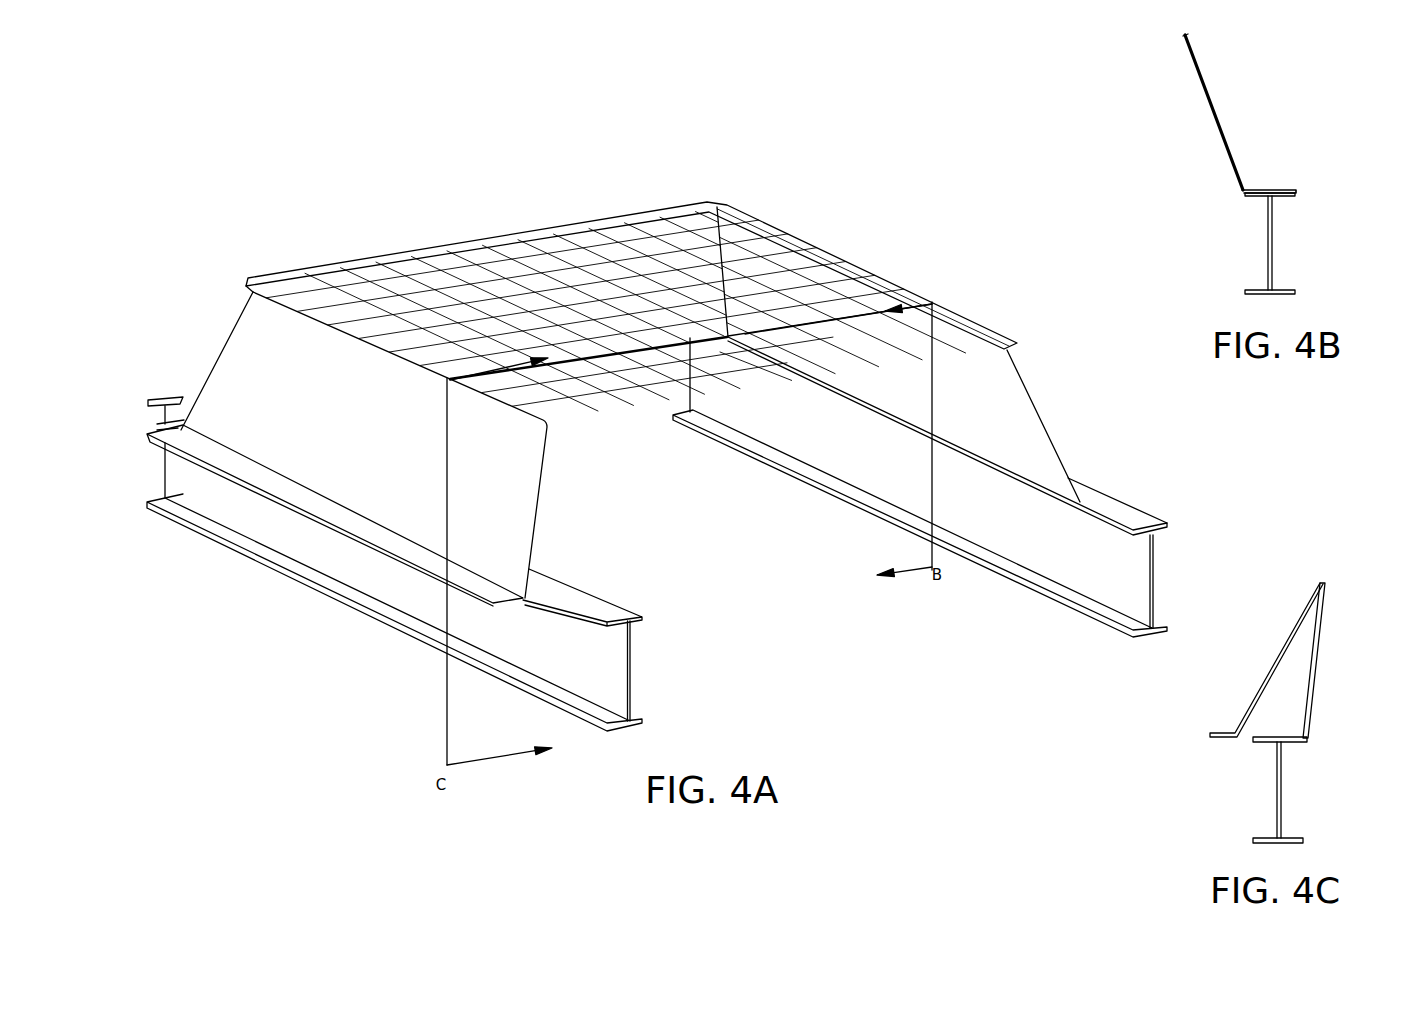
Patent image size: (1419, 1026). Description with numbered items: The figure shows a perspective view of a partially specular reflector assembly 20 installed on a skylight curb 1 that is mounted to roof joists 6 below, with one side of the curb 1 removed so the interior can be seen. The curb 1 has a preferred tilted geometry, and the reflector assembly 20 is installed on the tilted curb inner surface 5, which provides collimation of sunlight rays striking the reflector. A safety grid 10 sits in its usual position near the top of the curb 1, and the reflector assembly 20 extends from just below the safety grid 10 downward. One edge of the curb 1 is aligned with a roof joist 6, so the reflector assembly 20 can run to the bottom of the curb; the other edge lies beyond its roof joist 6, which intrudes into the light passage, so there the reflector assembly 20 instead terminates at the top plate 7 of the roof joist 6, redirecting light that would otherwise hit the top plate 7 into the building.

In FIG. 4A, the curb 1 is at (181, 364).
In FIG. 4A, the tilted curb inner surface 5 is at (896, 400).
In FIG. 4B, the tilted curb inner surface 5 is at (1245, 128).
In FIG. 4C, the tilted curb inner surface 5 is at (1295, 668).
In FIG. 4A, the roof joist 6 is at (1126, 470).
In FIG. 4B, the roof joist 6 is at (1267, 238).
In FIG. 4B, the top plate 7 is at (1278, 190).
In FIG. 4C, the top plate 7 is at (1286, 742).
In FIG. 4A, the safety grid 10 is at (557, 301).
In FIG. 4A, the reflector assembly 20 is at (539, 580).
In FIG. 4B, the reflector assembly 20 is at (1193, 129).
In FIG. 4C, the reflector assembly 20 is at (1345, 636).